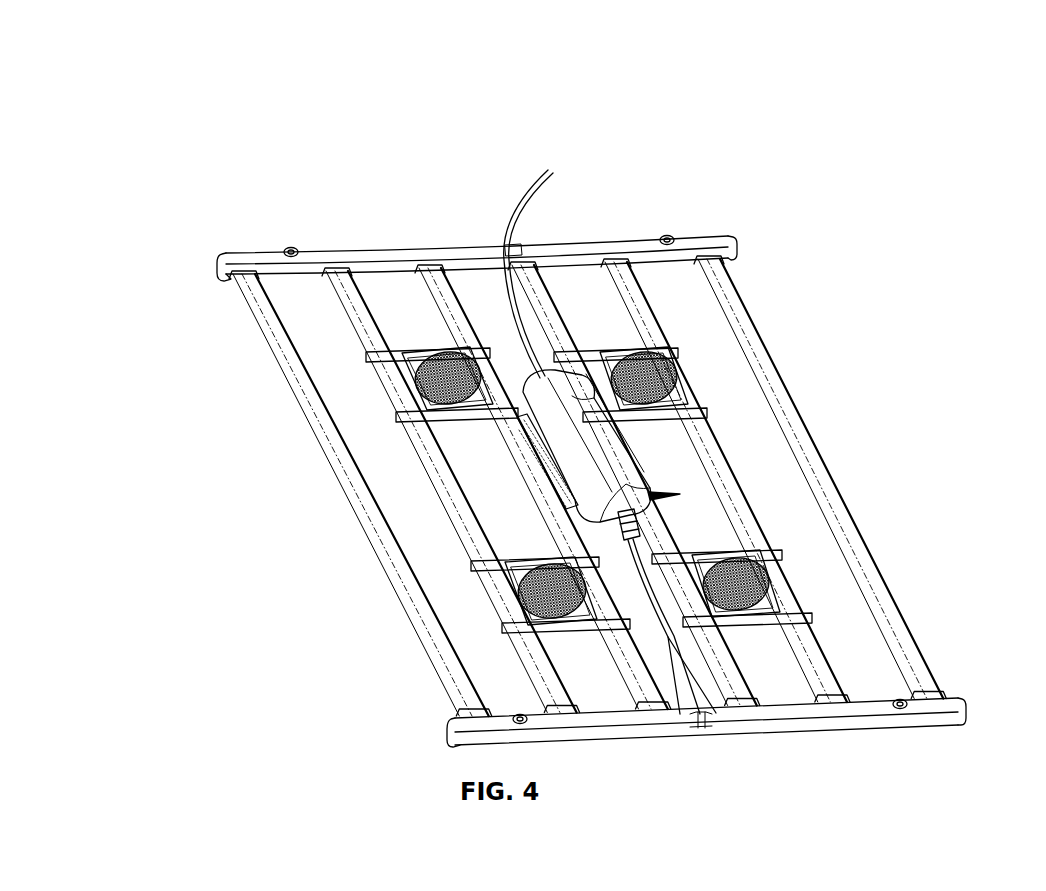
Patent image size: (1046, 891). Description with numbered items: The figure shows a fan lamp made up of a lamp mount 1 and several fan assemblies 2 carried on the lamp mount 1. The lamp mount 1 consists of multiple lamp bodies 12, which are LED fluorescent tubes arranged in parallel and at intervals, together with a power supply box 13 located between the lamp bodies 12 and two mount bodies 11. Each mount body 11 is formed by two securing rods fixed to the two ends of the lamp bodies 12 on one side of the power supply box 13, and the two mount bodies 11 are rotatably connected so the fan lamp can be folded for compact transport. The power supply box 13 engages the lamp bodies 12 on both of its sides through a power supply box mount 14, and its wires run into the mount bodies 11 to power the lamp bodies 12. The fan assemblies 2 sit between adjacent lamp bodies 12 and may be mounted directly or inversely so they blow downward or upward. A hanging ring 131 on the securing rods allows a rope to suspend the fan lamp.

The lamp mount 1 is at (510, 53).
The mount body 11 is at (372, 254).
The lamp body 12 is at (433, 263).
The power supply box 13 is at (503, 232).
The hanging ring 131 is at (290, 249).
The power supply box mount 14 is at (487, 347).
The fan assembly 2 is at (405, 387).